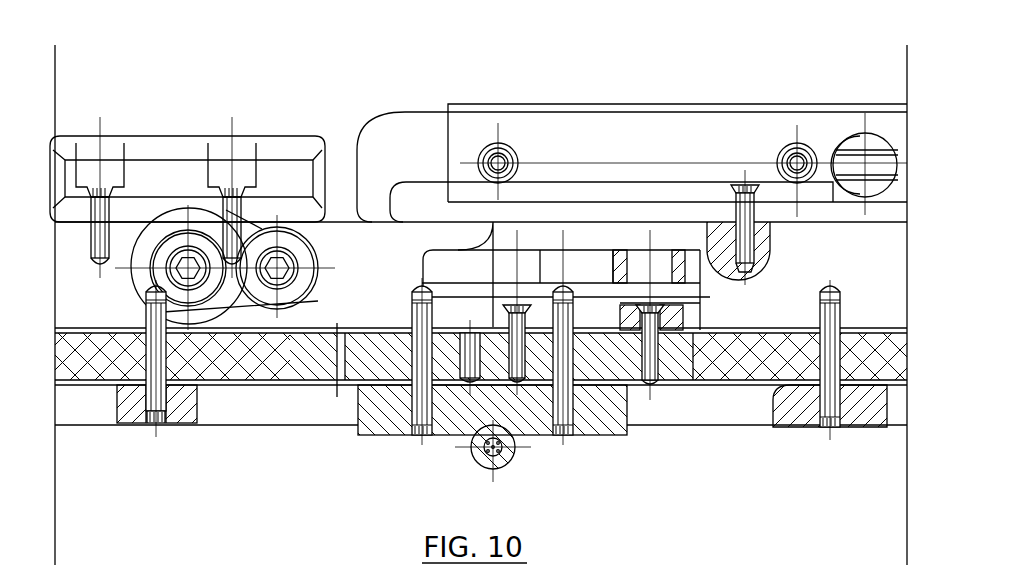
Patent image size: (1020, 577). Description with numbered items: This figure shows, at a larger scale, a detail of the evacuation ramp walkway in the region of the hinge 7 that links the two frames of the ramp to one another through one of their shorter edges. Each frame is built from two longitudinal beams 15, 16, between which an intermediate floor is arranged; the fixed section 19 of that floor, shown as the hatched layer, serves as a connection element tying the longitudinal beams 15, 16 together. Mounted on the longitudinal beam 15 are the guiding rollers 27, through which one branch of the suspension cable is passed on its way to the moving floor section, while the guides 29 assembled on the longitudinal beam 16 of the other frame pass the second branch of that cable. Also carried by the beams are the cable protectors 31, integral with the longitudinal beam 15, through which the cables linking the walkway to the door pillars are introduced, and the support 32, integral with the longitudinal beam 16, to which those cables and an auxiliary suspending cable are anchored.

The hinge 7 is at (513, 455).
The longitudinal beam 15 is at (87, 298).
The longitudinal beam 16 is at (865, 282).
The fixed section 19 is at (210, 360).
The guiding rollers 27 is at (268, 233).
The guides 29 is at (432, 253).
The cable protectors 31 is at (137, 141).
The supports 32 is at (650, 102).